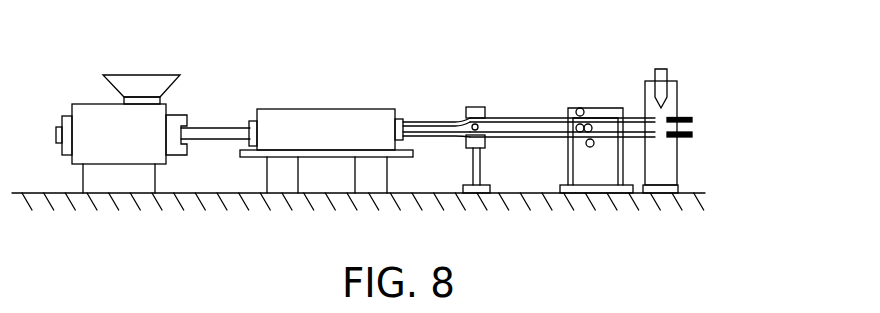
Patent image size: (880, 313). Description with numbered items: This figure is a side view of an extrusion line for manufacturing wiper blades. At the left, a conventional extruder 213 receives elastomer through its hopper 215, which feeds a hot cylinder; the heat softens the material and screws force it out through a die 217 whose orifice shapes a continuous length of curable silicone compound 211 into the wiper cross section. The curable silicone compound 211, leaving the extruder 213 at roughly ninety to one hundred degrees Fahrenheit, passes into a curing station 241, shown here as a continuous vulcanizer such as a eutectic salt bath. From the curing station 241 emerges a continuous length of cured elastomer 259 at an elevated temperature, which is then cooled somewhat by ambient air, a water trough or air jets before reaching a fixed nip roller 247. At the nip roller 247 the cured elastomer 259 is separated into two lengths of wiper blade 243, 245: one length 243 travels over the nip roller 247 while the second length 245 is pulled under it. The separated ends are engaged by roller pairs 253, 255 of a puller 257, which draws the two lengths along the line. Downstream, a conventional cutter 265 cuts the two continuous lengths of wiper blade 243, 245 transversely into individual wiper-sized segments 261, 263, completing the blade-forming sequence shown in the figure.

The curable silicone compound 211 is at (222, 127).
The extruder 213 is at (78, 104).
The hopper 215 is at (138, 75).
The die 217 is at (188, 149).
The curing station 241 is at (318, 109).
The first length of wiper blade 243 is at (527, 117).
The second length of wiper blade 245 is at (525, 142).
The nip roller 247 is at (478, 107).
The roller pair 253 is at (580, 108).
The roller pair 255 is at (590, 148).
The puller 257 is at (607, 105).
The cured elastomer 259 is at (423, 122).
The wiper-sized segment 261 is at (683, 117).
The wiper-sized segment 263 is at (683, 137).
The cutter 265 is at (663, 69).